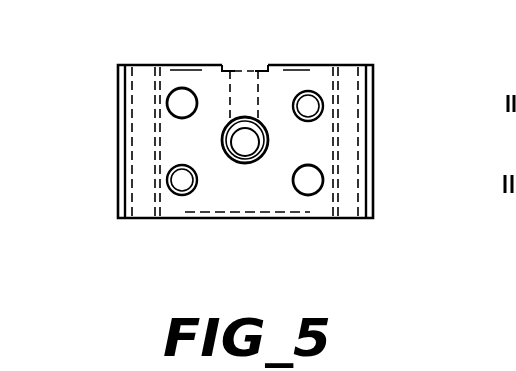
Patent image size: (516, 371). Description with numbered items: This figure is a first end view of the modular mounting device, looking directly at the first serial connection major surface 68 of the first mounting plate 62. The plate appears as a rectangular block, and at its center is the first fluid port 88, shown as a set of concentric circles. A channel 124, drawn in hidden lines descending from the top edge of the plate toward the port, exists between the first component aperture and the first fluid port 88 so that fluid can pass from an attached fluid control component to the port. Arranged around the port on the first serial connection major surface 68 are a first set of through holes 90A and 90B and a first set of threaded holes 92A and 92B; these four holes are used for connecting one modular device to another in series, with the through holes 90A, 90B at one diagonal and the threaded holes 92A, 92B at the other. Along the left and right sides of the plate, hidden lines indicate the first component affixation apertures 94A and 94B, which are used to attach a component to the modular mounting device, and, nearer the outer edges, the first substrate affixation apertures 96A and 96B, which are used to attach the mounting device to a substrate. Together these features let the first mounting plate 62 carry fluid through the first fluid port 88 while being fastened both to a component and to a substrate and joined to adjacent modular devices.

The first mounting plate 62 is at (212, 65).
The channel 124 is at (265, 98).
The first component affixation aperture 94A is at (140, 62).
The first component affixation aperture 94B is at (347, 65).
The first substrate affixation aperture 96A is at (143, 220).
The first substrate affixation aperture 96B is at (348, 222).
The through hole 90B is at (182, 104).
The threaded hole 92B is at (182, 180).
The threaded hole 92A is at (308, 107).
The through hole 90A is at (308, 180).
The first fluid port 88 is at (250, 160).
The first serial connection major surface 68 is at (223, 197).